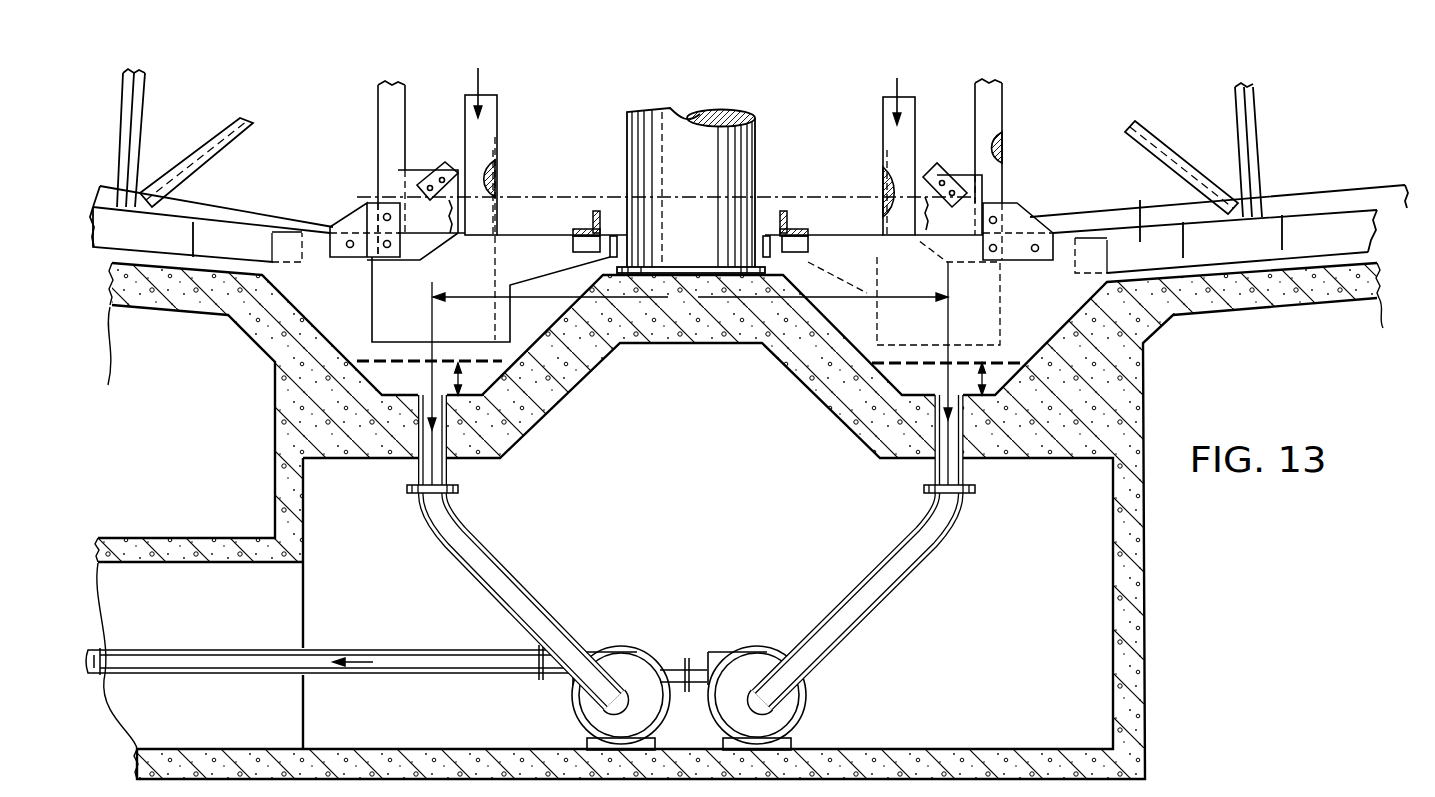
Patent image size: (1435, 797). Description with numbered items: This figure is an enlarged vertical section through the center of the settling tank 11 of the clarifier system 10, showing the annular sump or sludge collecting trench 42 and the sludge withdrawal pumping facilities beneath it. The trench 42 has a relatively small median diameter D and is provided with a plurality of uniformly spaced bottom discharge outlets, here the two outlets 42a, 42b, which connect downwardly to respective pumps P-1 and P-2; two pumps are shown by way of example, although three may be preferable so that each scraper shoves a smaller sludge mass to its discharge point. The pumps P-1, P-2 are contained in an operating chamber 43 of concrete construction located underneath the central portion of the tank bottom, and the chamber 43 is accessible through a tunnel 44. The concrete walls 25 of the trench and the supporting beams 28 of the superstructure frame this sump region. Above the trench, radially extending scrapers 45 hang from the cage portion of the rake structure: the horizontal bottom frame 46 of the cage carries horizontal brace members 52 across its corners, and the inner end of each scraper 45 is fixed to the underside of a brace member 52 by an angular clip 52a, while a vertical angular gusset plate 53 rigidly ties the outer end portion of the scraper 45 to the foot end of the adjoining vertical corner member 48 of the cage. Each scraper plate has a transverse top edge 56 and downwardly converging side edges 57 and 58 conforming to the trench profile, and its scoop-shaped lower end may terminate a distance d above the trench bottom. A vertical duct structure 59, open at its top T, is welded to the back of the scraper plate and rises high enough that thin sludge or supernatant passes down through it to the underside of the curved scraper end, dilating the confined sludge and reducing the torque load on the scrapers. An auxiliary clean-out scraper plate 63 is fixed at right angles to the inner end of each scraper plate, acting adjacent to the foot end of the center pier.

The pumping system 10 is at (1314, 167).
The tank 11 is at (675, 166).
The sloped concrete face 25 is at (345, 343).
The support beam 28 is at (121, 239).
The annular sump or sludge collecting trench 42 is at (308, 318).
The first suction pipe 42a is at (427, 414).
The second suction pipe 42b is at (945, 431).
The operating chamber 43 is at (684, 552).
The tunnel 44 is at (224, 620).
The scraper 45 is at (323, 313).
The horizontal bottom frame 46 is at (527, 215).
The vertical corner member 48 is at (390, 113).
The horizontal brace member 52 is at (598, 211).
The angular clip 52a is at (573, 246).
The vertical angular gusset plate 53 is at (356, 227).
The transverse top edge 56 is at (285, 233).
The side edge 57 is at (326, 326).
The side edge 58 is at (530, 346).
The vertical duct structure 59 is at (500, 130).
The auxiliary clean-out scraper plate 63 is at (763, 244).
The median diameter D is at (690, 373).
The distance d is at (462, 378).
The top opening T is at (490, 93).
The pump P-1 is at (628, 667).
The pump P-2 is at (750, 667).